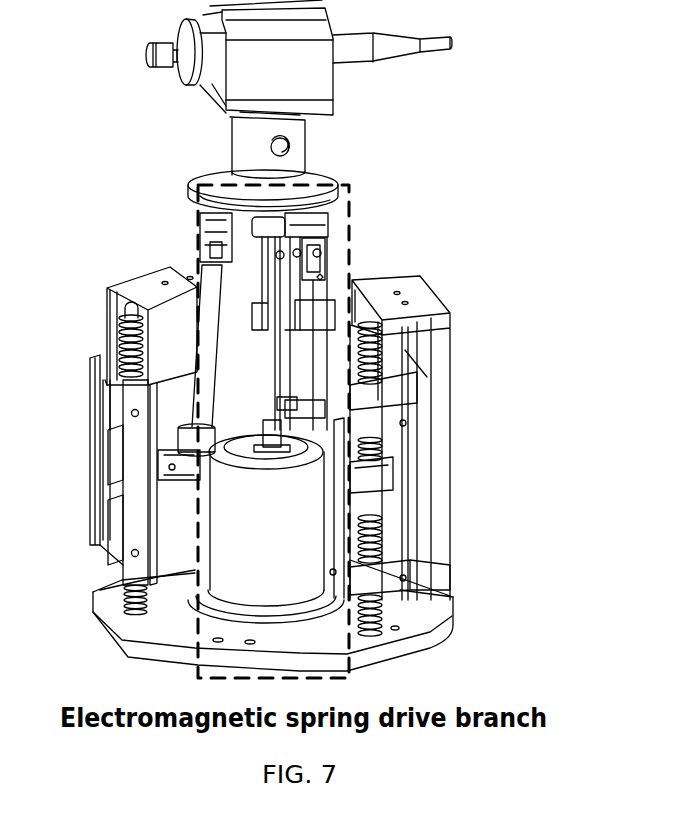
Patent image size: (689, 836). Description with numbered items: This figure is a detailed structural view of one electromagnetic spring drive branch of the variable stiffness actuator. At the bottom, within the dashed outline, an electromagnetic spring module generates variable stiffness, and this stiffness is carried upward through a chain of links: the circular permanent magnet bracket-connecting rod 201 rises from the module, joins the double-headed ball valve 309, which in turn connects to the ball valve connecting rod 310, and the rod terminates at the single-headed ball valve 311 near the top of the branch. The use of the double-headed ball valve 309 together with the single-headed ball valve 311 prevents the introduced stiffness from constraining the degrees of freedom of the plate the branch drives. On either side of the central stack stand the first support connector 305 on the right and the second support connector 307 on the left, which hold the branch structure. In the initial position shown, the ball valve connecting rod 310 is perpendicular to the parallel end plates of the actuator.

The single-headed ball valve 311 is at (271, 228).
The ball valve connecting rod 310 is at (271, 297).
The double-headed ball valve 309 is at (271, 349).
The circular permanent magnet bracket-connecting rod 201 is at (271, 391).
The support connector 1 305 is at (365, 502).
The support connector 2 307 is at (135, 392).